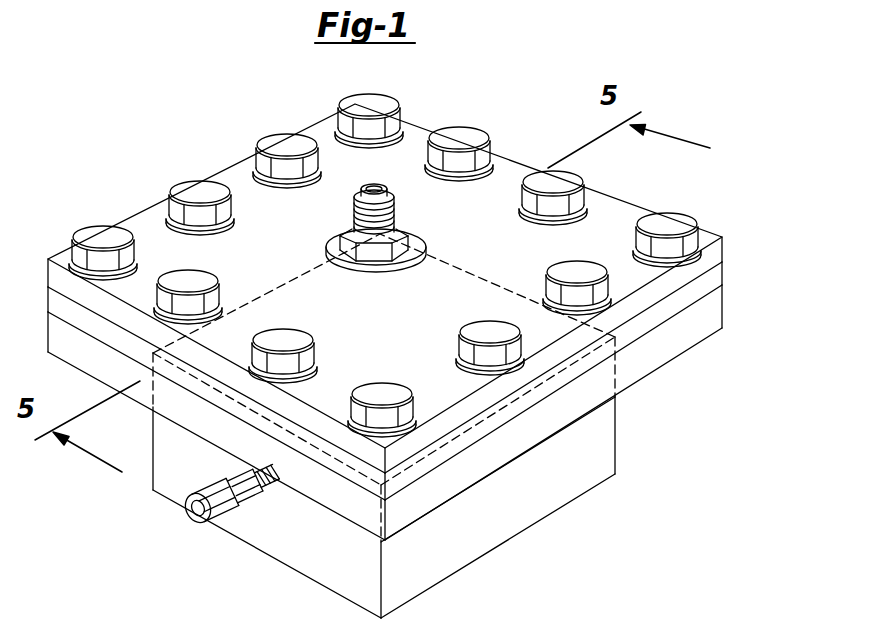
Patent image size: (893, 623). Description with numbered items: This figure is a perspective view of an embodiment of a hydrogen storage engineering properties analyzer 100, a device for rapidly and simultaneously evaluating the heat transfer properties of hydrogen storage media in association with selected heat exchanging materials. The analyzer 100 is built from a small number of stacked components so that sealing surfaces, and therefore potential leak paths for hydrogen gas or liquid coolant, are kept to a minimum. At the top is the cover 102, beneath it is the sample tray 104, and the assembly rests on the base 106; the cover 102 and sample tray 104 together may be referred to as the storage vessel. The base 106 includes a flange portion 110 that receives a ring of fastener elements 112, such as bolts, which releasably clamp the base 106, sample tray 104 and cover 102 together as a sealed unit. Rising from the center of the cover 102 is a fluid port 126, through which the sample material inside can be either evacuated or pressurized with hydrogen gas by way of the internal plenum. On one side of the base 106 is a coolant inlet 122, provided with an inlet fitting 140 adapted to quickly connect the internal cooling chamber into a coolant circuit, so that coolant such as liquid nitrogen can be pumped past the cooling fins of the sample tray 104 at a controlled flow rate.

The hydrogen storage engineering properties analyzer 100 is at (466, 97).
The cover 102 is at (718, 252).
The sample tray 104 is at (713, 282).
The flange portion 110 is at (713, 318).
The base 106 is at (475, 542).
The fastener elements 112 is at (200, 214).
The fluid port 126 is at (376, 158).
The coolant inlet 122 is at (189, 520).
The inlet fitting 140 is at (232, 504).